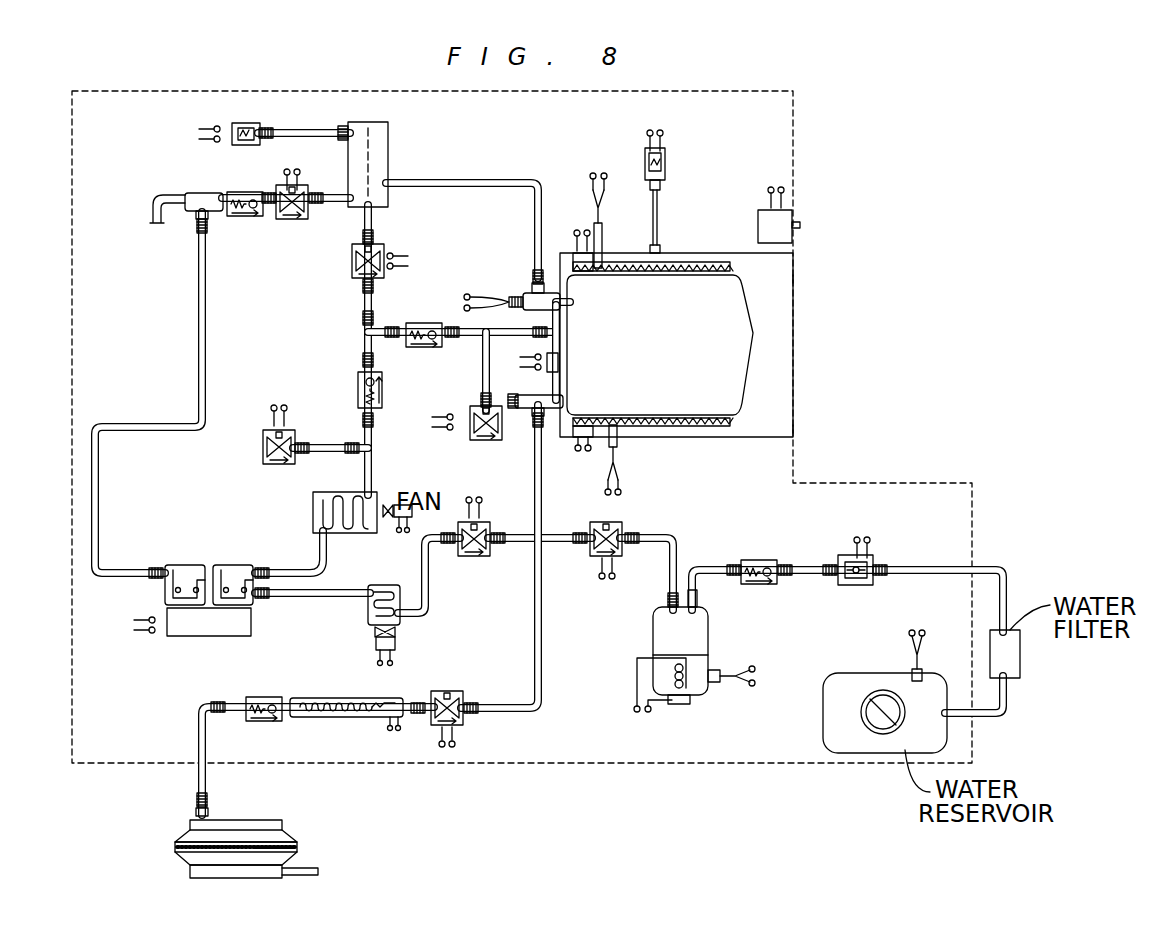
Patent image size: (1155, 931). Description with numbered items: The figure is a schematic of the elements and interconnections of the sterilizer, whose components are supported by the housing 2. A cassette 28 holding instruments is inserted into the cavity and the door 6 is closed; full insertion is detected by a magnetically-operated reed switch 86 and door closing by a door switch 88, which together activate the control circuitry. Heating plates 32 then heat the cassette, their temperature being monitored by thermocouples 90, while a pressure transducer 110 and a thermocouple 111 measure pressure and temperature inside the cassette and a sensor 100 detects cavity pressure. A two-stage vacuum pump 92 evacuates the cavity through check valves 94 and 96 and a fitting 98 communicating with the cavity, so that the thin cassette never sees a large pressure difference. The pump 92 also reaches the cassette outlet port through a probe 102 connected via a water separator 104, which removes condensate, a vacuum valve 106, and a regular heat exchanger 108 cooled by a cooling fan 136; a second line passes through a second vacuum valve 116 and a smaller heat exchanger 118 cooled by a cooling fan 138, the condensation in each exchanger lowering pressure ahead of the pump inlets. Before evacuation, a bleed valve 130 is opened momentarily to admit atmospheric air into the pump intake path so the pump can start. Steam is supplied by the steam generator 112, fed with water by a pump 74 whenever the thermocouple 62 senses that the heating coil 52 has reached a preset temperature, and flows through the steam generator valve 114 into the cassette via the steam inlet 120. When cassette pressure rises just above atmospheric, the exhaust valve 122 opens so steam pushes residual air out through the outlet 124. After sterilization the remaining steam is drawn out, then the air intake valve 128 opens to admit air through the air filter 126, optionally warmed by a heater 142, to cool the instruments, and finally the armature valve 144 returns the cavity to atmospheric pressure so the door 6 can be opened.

The housing 2 is at (300, 91).
The door 6 is at (795, 370).
The cassette 28 is at (667, 369).
The heating plates 32 is at (690, 266).
The heating coil 52 is at (675, 678).
The thermocouple 62 is at (722, 672).
The pump 74 is at (872, 560).
The reed switch 86 is at (545, 360).
The door switch 88 is at (795, 225).
The thermocouples 90 is at (596, 220).
The two-stage vacuum pump 92 is at (210, 640).
The check valve 94 is at (386, 392).
The check valve 96 is at (420, 350).
The fitting 98 is at (560, 330).
The sensor 100 is at (667, 160).
The probe 102 is at (530, 290).
The water separator 104 is at (392, 140).
The vacuum valve 106 is at (350, 262).
The regular heat exchanger 108 is at (311, 512).
The pressure transducer 110 is at (215, 130).
The thermocouple 111 is at (462, 303).
The steam generator 112 is at (705, 618).
The steam generator valve 114 is at (598, 560).
The second vacuum valve 116 is at (474, 560).
The smaller heat exchanger 118 is at (366, 610).
The steam inlet 120 is at (530, 405).
The exhaust valve 122 is at (292, 220).
The outlet 124 is at (160, 195).
The air filter 126 is at (285, 830).
The air intake valve 128 is at (455, 690).
The bleed valve 130 is at (262, 445).
The cooling fan 136 is at (392, 506).
The cooling fan 138 is at (398, 645).
The heater 142 is at (370, 720).
The armature valve 144 is at (485, 440).